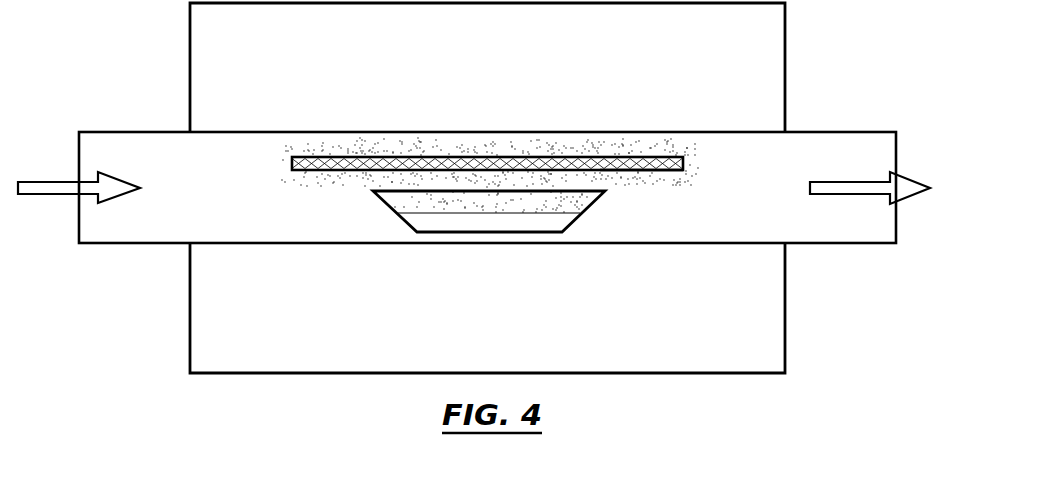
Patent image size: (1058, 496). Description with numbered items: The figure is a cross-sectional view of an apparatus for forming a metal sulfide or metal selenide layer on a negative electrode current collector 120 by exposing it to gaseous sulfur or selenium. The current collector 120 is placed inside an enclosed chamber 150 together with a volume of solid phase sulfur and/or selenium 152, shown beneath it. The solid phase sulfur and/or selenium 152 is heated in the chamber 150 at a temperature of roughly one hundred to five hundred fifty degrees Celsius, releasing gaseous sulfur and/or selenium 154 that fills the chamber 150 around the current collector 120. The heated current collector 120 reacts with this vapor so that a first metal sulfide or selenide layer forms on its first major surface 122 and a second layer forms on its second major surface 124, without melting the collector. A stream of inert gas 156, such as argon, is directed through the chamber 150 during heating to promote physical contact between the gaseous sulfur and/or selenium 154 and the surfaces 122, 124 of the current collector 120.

The negative electrode current collector 120 is at (683, 163).
The first major surface 122 is at (653, 157).
The second major surface 124 is at (648, 172).
The enclosed chamber 150 is at (575, 132).
The volume of solid phase sulfur and/or selenium 152 is at (558, 222).
The gaseous sulfur and/or selenium 154 is at (368, 181).
The stream of inert gas 156 is at (42, 195).